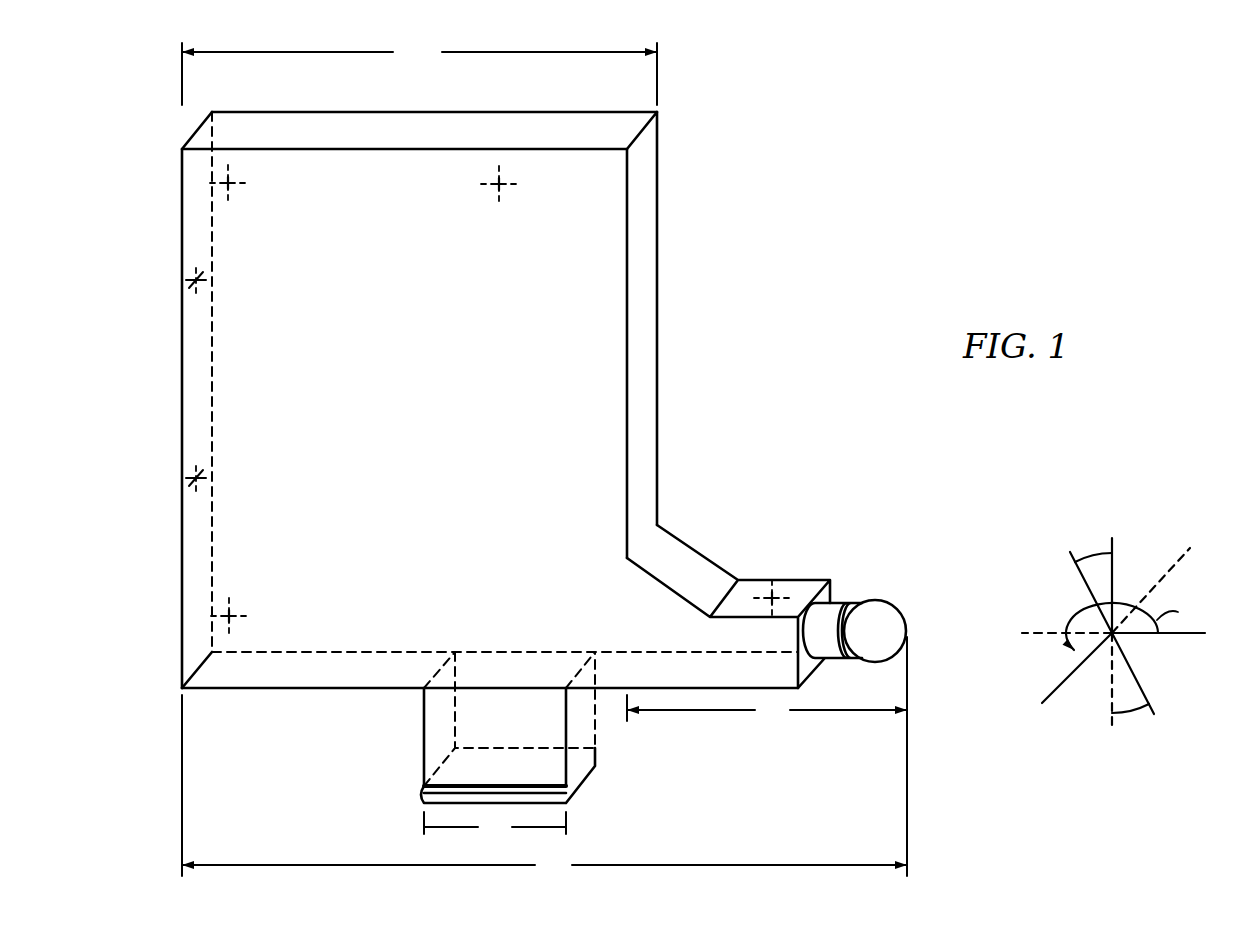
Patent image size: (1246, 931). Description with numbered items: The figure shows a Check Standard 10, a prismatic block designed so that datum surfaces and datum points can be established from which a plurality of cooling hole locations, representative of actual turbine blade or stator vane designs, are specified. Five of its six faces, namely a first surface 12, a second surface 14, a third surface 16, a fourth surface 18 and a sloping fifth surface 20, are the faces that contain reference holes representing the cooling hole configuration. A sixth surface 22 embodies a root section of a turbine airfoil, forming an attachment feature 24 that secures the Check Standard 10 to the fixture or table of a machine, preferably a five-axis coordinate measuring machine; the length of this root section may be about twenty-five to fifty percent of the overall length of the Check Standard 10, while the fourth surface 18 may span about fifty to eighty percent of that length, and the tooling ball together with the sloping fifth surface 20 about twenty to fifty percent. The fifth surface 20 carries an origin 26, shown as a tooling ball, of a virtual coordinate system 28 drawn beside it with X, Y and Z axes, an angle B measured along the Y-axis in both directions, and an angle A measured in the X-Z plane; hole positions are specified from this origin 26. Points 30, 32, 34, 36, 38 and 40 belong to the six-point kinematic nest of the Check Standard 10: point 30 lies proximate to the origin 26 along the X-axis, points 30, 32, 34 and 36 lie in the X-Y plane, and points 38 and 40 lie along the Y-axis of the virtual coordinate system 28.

The Check Standard 10 is at (771, 218).
The first surface 12 is at (440, 403).
The second surface 14 is at (197, 380).
The third surface 16 is at (657, 163).
The fourth surface 18 is at (282, 130).
The fifth surface 20 is at (650, 355).
The sixth surface 22 is at (352, 672).
The attachment feature 24 is at (656, 747).
The origin 26 is at (888, 611).
The virtual coordinate system 28 is at (1042, 556).
The kinematic nest point 30 is at (772, 590).
The kinematic nest point 32 is at (506, 202).
The kinematic nest point 34 is at (248, 176).
The kinematic nest point 36 is at (246, 595).
The kinematic nest point 38 is at (176, 466).
The kinematic nest point 40 is at (176, 269).